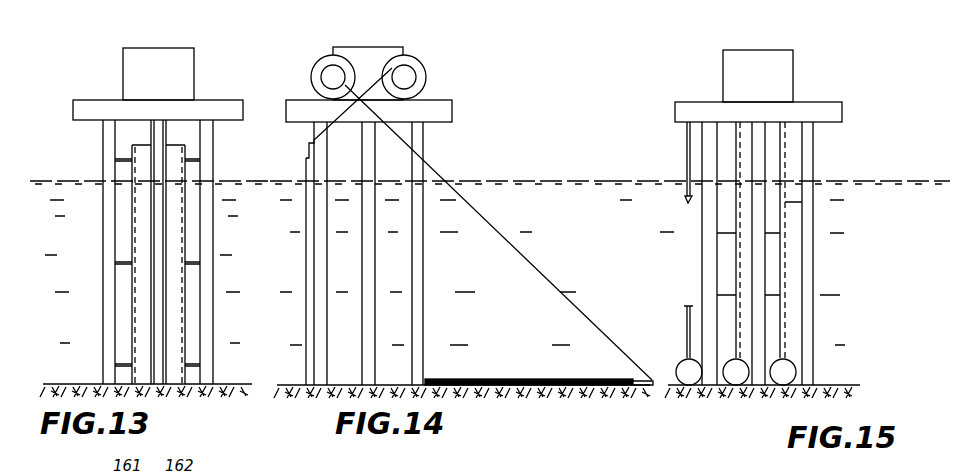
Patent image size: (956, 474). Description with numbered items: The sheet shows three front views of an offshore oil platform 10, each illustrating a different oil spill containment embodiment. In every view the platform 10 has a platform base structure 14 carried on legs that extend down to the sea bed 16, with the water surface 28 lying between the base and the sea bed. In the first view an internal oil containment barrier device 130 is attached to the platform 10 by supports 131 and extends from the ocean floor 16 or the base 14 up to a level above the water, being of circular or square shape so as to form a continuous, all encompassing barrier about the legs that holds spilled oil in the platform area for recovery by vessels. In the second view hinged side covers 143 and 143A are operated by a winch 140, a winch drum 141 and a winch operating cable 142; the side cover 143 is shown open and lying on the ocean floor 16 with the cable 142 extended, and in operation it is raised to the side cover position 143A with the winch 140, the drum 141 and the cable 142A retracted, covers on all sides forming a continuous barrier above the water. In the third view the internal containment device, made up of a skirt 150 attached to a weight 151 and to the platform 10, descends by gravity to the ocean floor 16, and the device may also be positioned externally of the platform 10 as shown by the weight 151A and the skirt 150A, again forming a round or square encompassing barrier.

In FIG. 13, the offshore oil platform 10 is at (194, 56).
In FIG. 14, the offshore oil platform 10 is at (368, 47).
In FIG. 15, the offshore oil platform 10 is at (762, 50).
In FIG. 13, the platform base structure 14 is at (228, 108).
In FIG. 13, the sea bed 16 is at (70, 384).
In FIG. 14, the sea bed 16 is at (344, 384).
In FIG. 15, the sea bed 16 is at (845, 384).
In FIG. 13, the water surface 28 is at (233, 180).
In FIG. 14, the water surface 28 is at (508, 180).
In FIG. 15, the water surface 28 is at (843, 180).
In FIG. 13, the oil containment barrier device 130 is at (132, 205).
In FIG. 13, the supports 131 is at (128, 262).
In FIG. 14, the winch 140 is at (419, 58).
In FIG. 14, the winch drum 141 is at (418, 78).
In FIG. 14, the winch operating cable 142 is at (437, 160).
In FIG. 14, the retracted cable 142A is at (345, 85).
In FIG. 14, the side cover 143 is at (508, 378).
In FIG. 14, the side cover position 143A is at (305, 241).
In FIG. 15, the skirt 150 is at (736, 136).
In FIG. 15, the external skirt 150A is at (686, 190).
In FIG. 15, the weight 151 is at (727, 361).
In FIG. 15, the external weight 151A is at (683, 385).